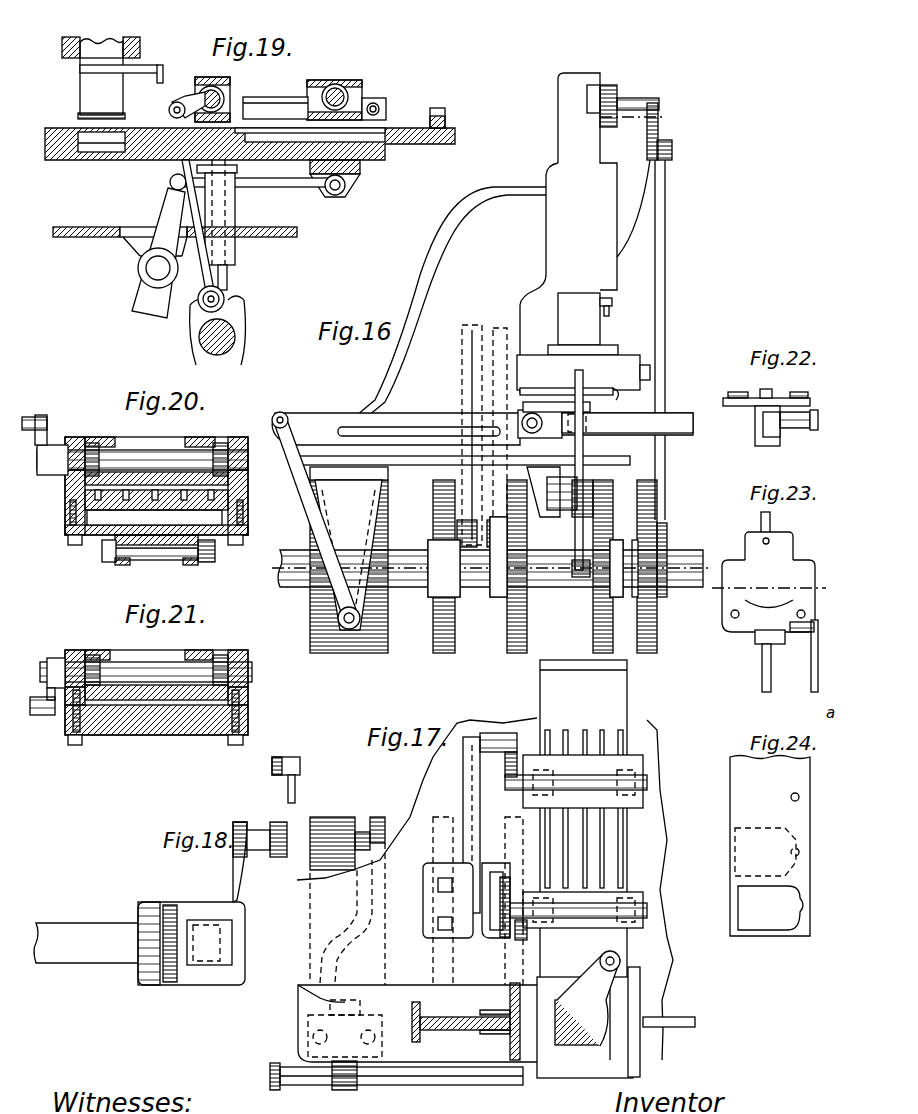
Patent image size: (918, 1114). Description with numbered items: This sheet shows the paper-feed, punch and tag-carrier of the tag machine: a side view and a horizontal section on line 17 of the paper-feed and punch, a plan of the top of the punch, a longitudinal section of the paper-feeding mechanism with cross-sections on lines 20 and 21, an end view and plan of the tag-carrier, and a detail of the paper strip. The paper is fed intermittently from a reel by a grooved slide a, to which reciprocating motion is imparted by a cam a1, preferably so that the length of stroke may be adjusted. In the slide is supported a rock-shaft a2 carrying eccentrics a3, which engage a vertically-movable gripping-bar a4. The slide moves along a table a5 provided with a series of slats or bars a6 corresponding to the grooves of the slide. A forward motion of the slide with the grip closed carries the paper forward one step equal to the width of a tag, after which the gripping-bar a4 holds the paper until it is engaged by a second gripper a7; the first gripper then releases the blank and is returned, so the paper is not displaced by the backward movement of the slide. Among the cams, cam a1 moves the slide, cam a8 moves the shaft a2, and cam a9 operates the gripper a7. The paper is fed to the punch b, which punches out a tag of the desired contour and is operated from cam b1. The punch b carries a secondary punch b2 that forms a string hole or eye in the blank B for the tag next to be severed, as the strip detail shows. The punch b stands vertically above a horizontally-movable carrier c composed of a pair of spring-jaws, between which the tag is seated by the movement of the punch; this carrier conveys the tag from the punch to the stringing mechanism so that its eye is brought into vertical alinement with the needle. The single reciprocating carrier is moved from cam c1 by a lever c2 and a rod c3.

In FIG. 19, the grooved slide a is at (334, 89).
In FIG. 20, the grooved slide a is at (156, 481).
In FIG. 17, the grooved slide a is at (576, 781).
In FIG. 16, the cam a1 is at (594, 612).
In FIG. 19, the rock-shaft a2 is at (322, 92).
In FIG. 20, the rock-shaft a2 is at (235, 462).
In FIG. 17, the rock-shaft a2 is at (576, 858).
In FIG. 19, the eccentrics a3 is at (350, 98).
In FIG. 20, the eccentrics a3 is at (112, 446).
In FIG. 19, the gripping-bar a4 is at (318, 110).
In FIG. 20, the gripping-bar a4 is at (147, 480).
In FIG. 19, the table a5 is at (390, 129).
In FIG. 19, the slats or bars a6 is at (355, 152).
In FIG. 20, the slats or bars a6 is at (232, 490).
In FIG. 17, the slats or bars a6 is at (601, 731).
In FIG. 19, the second gripper a7 is at (199, 90).
In FIG. 21, the second gripper a7 is at (148, 678).
In FIG. 17, the second gripper a7 is at (540, 930).
In FIG. 16, the cam a8 is at (436, 566).
In FIG. 16, the cam a9 is at (524, 610).
In FIG. 19, the punch b is at (110, 78).
In FIG. 16, the punch b is at (594, 233).
In FIG. 17, the punch b is at (578, 1045).
In FIG. 18, the punch b is at (200, 930).
In FIG. 16, the cam b1 is at (655, 605).
In FIG. 19, the secondary punch b2 is at (164, 72).
In FIG. 16, the secondary punch b2 is at (612, 303).
In FIG. 17, the secondary punch b2 is at (600, 961).
In FIG. 16, the carrier c is at (569, 400).
In FIG. 22, the carrier c is at (770, 411).
In FIG. 23, the carrier c is at (769, 602).
In FIG. 16, the cam c1 is at (382, 613).
In FIG. 17, the cam c1 is at (355, 818).
In FIG. 16, the lever c2 is at (302, 503).
In FIG. 17, the lever c2 is at (308, 1087).
In FIG. 16, the rod c3 is at (386, 426).
In FIG. 17, the rod c3 is at (398, 1075).
In FIG. 24a, the blank B is at (769, 879).
In FIG. 16, the section line 17 17 is at (395, 296).
In FIG. 19, the section line 20 20 is at (336, 72).
In FIG. 19, the section line 21 21 is at (212, 115).